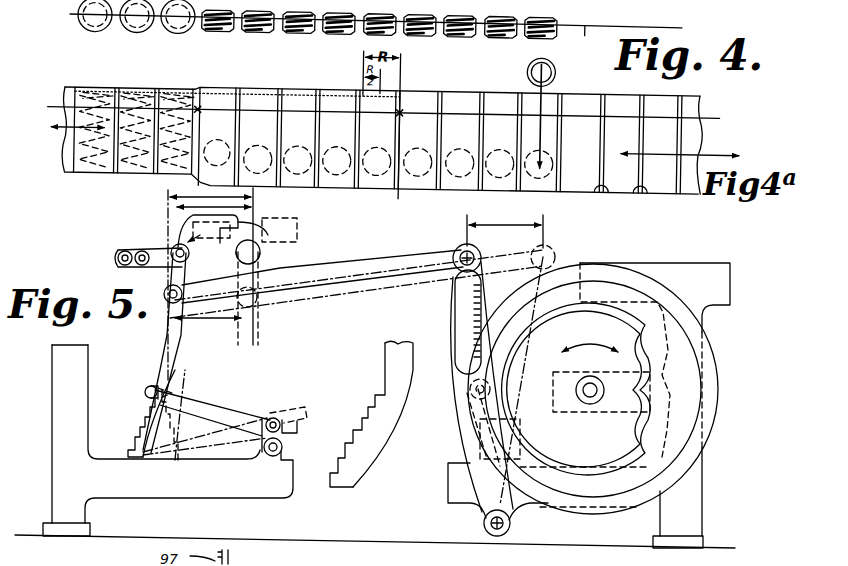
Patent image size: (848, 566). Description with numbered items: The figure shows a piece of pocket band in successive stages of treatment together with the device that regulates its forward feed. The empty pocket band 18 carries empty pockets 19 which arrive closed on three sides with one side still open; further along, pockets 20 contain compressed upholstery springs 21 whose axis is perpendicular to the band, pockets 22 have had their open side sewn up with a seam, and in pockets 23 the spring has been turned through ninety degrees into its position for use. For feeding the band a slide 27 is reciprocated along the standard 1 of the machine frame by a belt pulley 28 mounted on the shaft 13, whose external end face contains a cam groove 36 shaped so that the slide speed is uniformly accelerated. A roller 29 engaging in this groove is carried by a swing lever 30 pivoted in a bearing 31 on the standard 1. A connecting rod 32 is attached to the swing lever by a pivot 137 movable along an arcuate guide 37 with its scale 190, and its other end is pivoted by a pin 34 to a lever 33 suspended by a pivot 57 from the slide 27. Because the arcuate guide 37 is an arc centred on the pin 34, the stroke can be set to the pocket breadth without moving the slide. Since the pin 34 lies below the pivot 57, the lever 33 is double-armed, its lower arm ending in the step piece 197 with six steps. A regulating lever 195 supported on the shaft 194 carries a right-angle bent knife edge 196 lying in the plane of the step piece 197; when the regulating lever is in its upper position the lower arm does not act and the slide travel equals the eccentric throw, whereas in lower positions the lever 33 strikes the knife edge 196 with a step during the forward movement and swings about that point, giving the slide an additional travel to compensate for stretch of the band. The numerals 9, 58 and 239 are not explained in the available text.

In FIG. 5, the standard 1 is at (64, 406).
In FIG. 4A, the recesses 9 is at (640, 183).
In FIG. 5, the shaft 13 is at (592, 398).
In FIG. 4A, the empty pocket band 18 is at (696, 104).
In FIG. 4, the empty pockets 19 is at (585, 24).
In FIG. 4A, the empty pockets 19 is at (662, 183).
In FIG. 4, the pockets containing springs 20 is at (490, 29).
In FIG. 4A, the pockets containing springs 20 is at (548, 183).
In FIG. 4A, the upholstery springs 21 is at (92, 102).
In FIG. 4, the pockets sewn up with seam 22 is at (252, 29).
In FIG. 4A, the pockets sewn up with seam 22 is at (260, 170).
In FIG. 4, the pockets with turned springs 23 is at (178, 31).
In FIG. 4A, the pockets with turned springs 23 is at (142, 158).
In FIG. 5, the slide 27 is at (268, 244).
In FIG. 5, the belt pulley 28 is at (646, 282).
In FIG. 5, the roller 29 is at (476, 394).
In FIG. 5, the swing lever 30 is at (465, 442).
In FIG. 5, the bearing 31 is at (486, 524).
In FIG. 5, the connecting rod 32 is at (318, 293).
In FIG. 5, the lever 33 is at (164, 364).
In FIG. 5, the pin 34 is at (168, 302).
In FIG. 5, the cam groove 36 is at (570, 486).
In FIG. 5, the arcuate guide 37 is at (458, 305).
In FIG. 5, the pivot 57 is at (172, 246).
In FIG. 5, the feed arm 58 is at (268, 216).
In FIG. 5, the pivot 137 is at (460, 252).
In FIG. 5, the scale 190 is at (482, 306).
In FIG. 5, the shaft 194 is at (284, 423).
In FIG. 5, the regulating lever 195 is at (220, 410).
In FIG. 5, the knife edge 196 is at (146, 394).
In FIG. 5, the step piece 197 is at (145, 458).
In FIG. 5, the link 239 is at (132, 252).